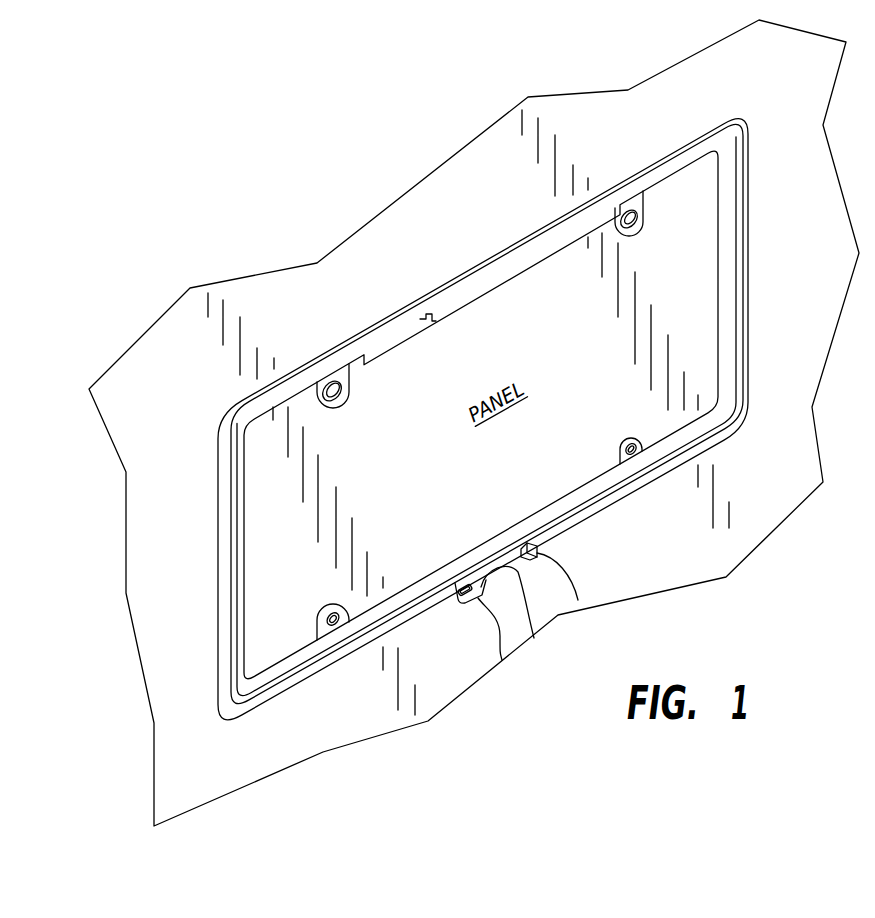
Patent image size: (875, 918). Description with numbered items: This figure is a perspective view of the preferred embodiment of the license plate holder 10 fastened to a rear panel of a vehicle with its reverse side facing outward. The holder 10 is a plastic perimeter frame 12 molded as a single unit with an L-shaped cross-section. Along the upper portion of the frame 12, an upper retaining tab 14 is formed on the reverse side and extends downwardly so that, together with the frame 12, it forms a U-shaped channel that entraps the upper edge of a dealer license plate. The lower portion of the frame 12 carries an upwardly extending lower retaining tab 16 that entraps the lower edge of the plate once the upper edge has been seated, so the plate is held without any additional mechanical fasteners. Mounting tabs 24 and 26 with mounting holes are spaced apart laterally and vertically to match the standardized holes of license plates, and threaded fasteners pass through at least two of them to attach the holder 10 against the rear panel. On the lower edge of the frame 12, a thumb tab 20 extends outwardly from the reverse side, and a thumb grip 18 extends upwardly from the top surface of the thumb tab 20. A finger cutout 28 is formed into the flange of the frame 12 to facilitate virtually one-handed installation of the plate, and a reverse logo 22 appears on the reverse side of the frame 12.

The license plate holder 10 is at (362, 318).
The perimeter frame 12 is at (487, 259).
The upper retaining tab 14 is at (428, 313).
The lower retaining tab 16 is at (578, 600).
The thumb grip 18 is at (464, 583).
The thumb tab 20 is at (502, 660).
The reverse logo 22 is at (498, 292).
The mounting tab 24 is at (348, 390).
The mounting tab 26 is at (328, 604).
The finger cutout 28 is at (534, 638).